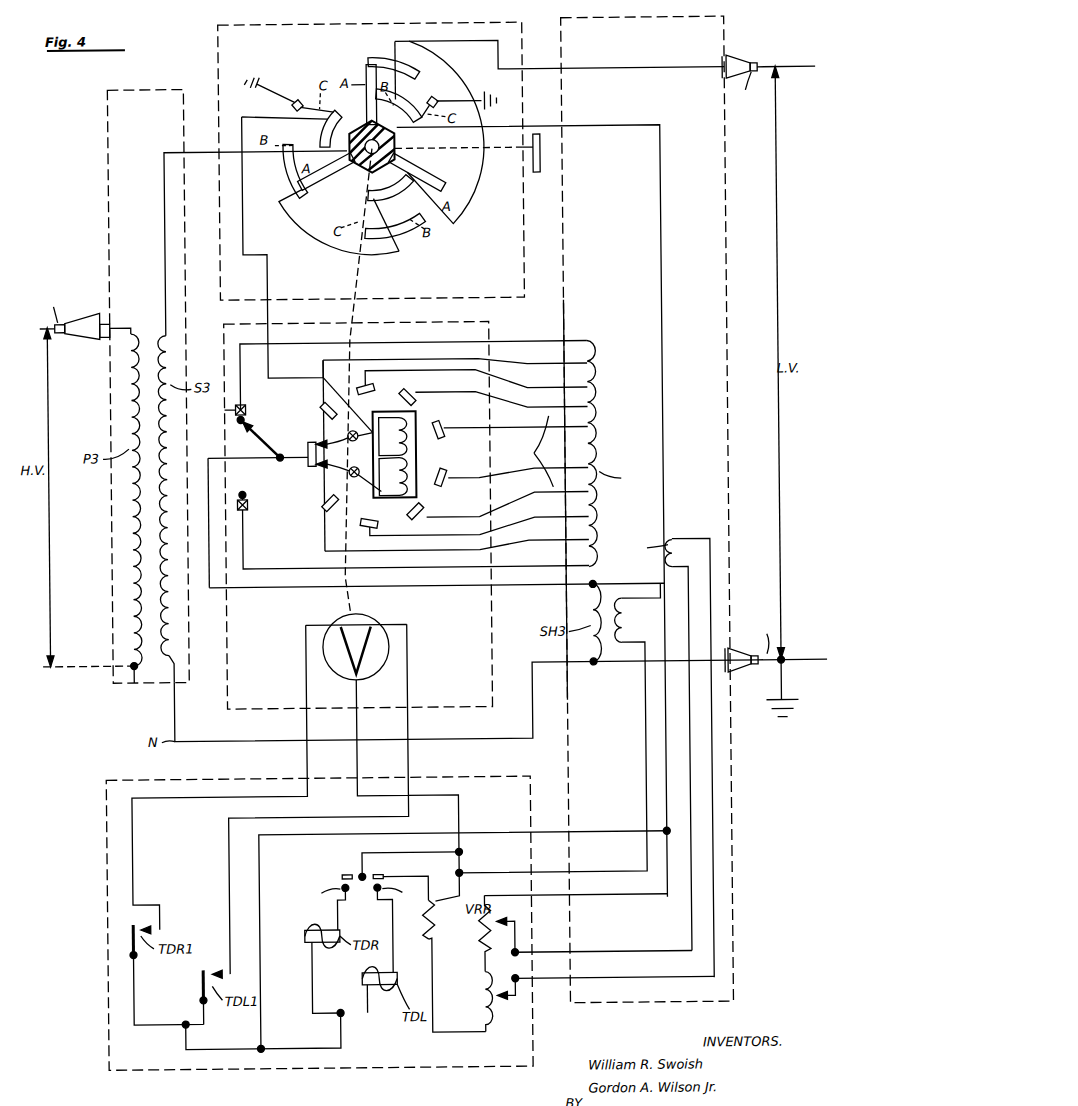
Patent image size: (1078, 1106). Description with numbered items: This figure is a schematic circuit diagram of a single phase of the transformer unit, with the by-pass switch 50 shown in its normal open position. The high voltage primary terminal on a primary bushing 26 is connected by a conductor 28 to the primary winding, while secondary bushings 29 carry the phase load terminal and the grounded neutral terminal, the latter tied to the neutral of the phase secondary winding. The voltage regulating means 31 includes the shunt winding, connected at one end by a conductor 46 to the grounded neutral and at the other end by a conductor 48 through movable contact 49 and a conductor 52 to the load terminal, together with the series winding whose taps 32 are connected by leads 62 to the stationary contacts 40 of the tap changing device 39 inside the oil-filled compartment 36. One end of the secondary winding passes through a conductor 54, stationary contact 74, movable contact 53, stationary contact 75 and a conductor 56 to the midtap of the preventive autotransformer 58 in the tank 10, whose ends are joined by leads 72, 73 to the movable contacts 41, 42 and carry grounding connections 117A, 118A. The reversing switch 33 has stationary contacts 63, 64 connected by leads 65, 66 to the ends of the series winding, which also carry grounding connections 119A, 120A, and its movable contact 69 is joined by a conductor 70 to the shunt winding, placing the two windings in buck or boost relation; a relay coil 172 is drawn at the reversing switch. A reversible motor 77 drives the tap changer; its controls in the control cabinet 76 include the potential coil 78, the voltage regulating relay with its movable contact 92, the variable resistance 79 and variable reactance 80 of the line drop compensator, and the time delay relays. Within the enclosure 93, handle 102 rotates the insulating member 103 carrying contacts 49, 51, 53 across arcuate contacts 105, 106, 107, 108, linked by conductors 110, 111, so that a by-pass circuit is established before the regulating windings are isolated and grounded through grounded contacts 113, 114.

The tank 10 is at (729, 32).
The primary bushing 26 is at (86, 310).
The conductor 28 is at (128, 327).
The secondary bushing 29 is at (746, 60).
The voltage regulating means 31 is at (525, 328).
The taps 32 is at (602, 436).
The reversing switch 33 is at (277, 430).
The compartment 36 is at (464, 321).
The tap changing device 39 is at (299, 527).
The stationary contacts 40 is at (446, 470).
The movable contact 41 is at (320, 440).
The movable contact 42 is at (321, 467).
The conductor 46 is at (246, 739).
The conductor 48 is at (618, 126).
The movable contact 49 is at (370, 92).
The by-pass switch 50 is at (303, 51).
The movable contact 51 is at (438, 178).
The conductor 52 is at (620, 68).
The movable contact 53 is at (318, 190).
The conductor 54 is at (168, 208).
The conductor 56 is at (271, 283).
The preventive autotransformer 58 is at (417, 488).
The leads 62 is at (531, 451).
The stationary contact 63 is at (247, 418).
The stationary contact 64 is at (246, 494).
The lead 65 is at (314, 341).
The lead 66 is at (310, 584).
The movable contact 69 is at (262, 444).
The conductor 70 is at (222, 588).
The lead 72 is at (337, 452).
The lead 73 is at (346, 461).
The stationary contact 74 is at (290, 176).
The stationary contact 75 is at (326, 118).
The control cabinet 76 is at (104, 836).
The reversible motor 77 is at (375, 622).
The potential coil 78 is at (636, 628).
The variable resistance 79 is at (478, 940).
The variable reactance 80 is at (480, 1010).
The movable contact 92 is at (356, 872).
The enclosure 93 is at (223, 56).
The handle 102 is at (541, 172).
The rotatable insulating member 103 is at (400, 141).
The stationary contact 105 is at (378, 54).
The stationary contact 106 is at (420, 108).
The stationary contact 107 is at (370, 193).
The stationary contact 108 is at (408, 236).
The conductor 110 is at (324, 248).
The conductor 111 is at (476, 188).
The grounded stationary contact 113 is at (447, 96).
The grounded stationary contact 114 is at (302, 97).
The grounding lug connection 117A is at (356, 429).
The grounding lug connection 118A is at (356, 475).
The grounding lug connection 119A is at (218, 410).
The grounding lug connection 120A is at (248, 508).
The relay coil 172 is at (308, 462).